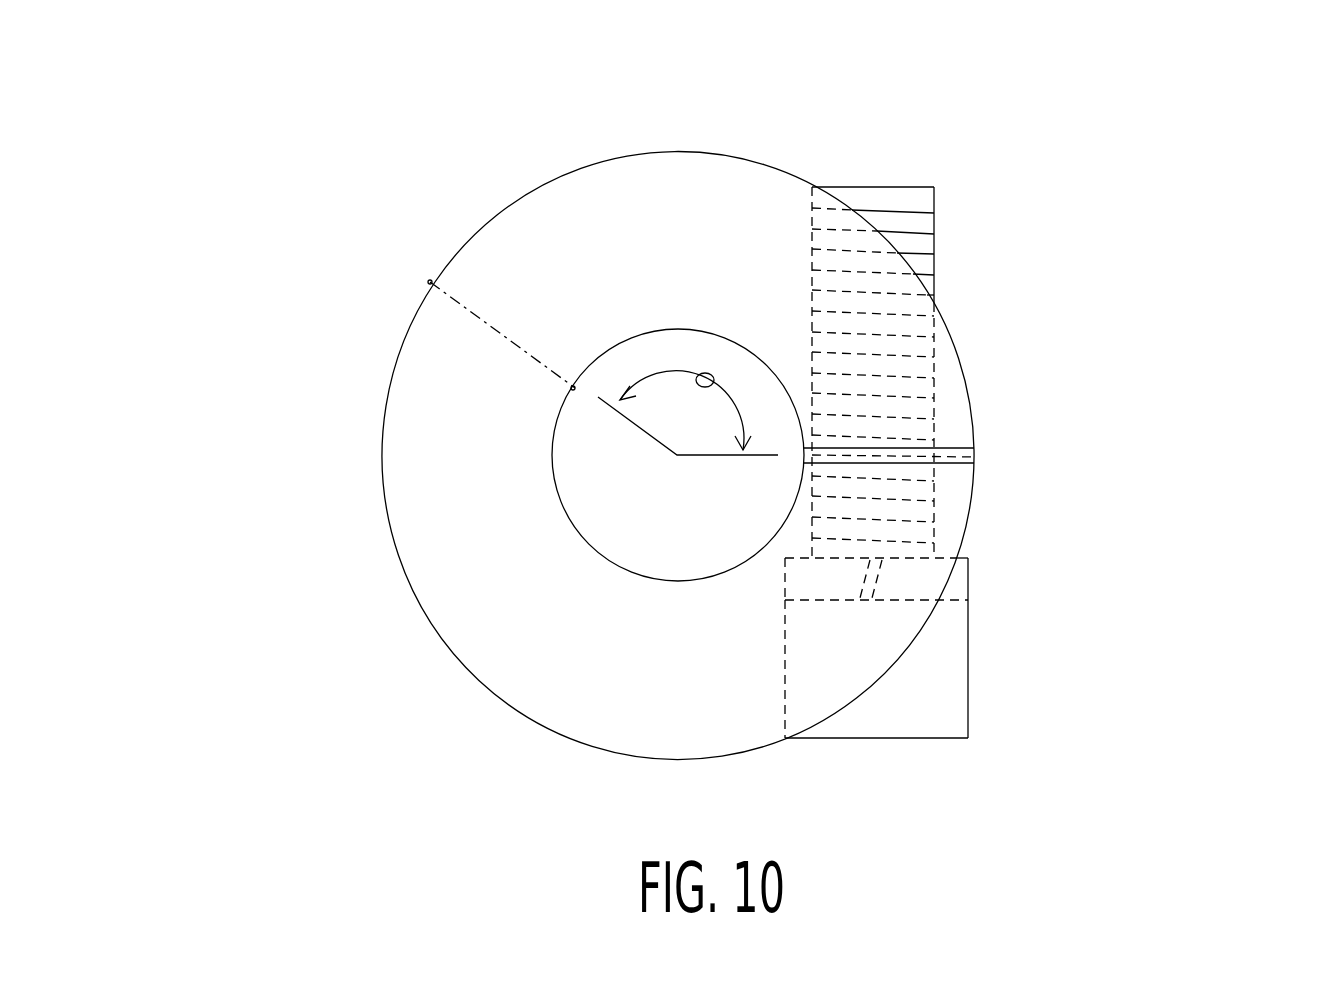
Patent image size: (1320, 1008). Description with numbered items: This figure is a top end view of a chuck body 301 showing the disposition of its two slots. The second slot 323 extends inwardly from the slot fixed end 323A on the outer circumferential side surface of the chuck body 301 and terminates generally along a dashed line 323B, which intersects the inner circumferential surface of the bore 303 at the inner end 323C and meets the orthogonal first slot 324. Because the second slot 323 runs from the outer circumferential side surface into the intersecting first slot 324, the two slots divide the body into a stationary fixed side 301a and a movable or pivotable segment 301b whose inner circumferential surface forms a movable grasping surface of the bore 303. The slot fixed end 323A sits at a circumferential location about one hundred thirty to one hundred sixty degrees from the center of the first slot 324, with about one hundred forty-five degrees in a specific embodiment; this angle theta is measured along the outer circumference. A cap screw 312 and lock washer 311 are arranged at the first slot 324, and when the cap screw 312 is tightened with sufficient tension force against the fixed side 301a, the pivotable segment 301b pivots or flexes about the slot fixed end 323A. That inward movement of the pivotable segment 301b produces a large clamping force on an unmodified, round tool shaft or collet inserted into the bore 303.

The chuck body 301 is at (598, 403).
The pivotable segment 301b is at (597, 247).
The fixed side 301a is at (608, 673).
The bore 303 is at (580, 537).
The second slot 323 is at (977, 456).
The slot fixed end 323A is at (428, 280).
The dashed line 323B is at (376, 346).
The inner end 323C is at (499, 417).
The first slot 324 is at (977, 440).
The lock washer 311 is at (970, 580).
The cap screw 312 is at (970, 695).